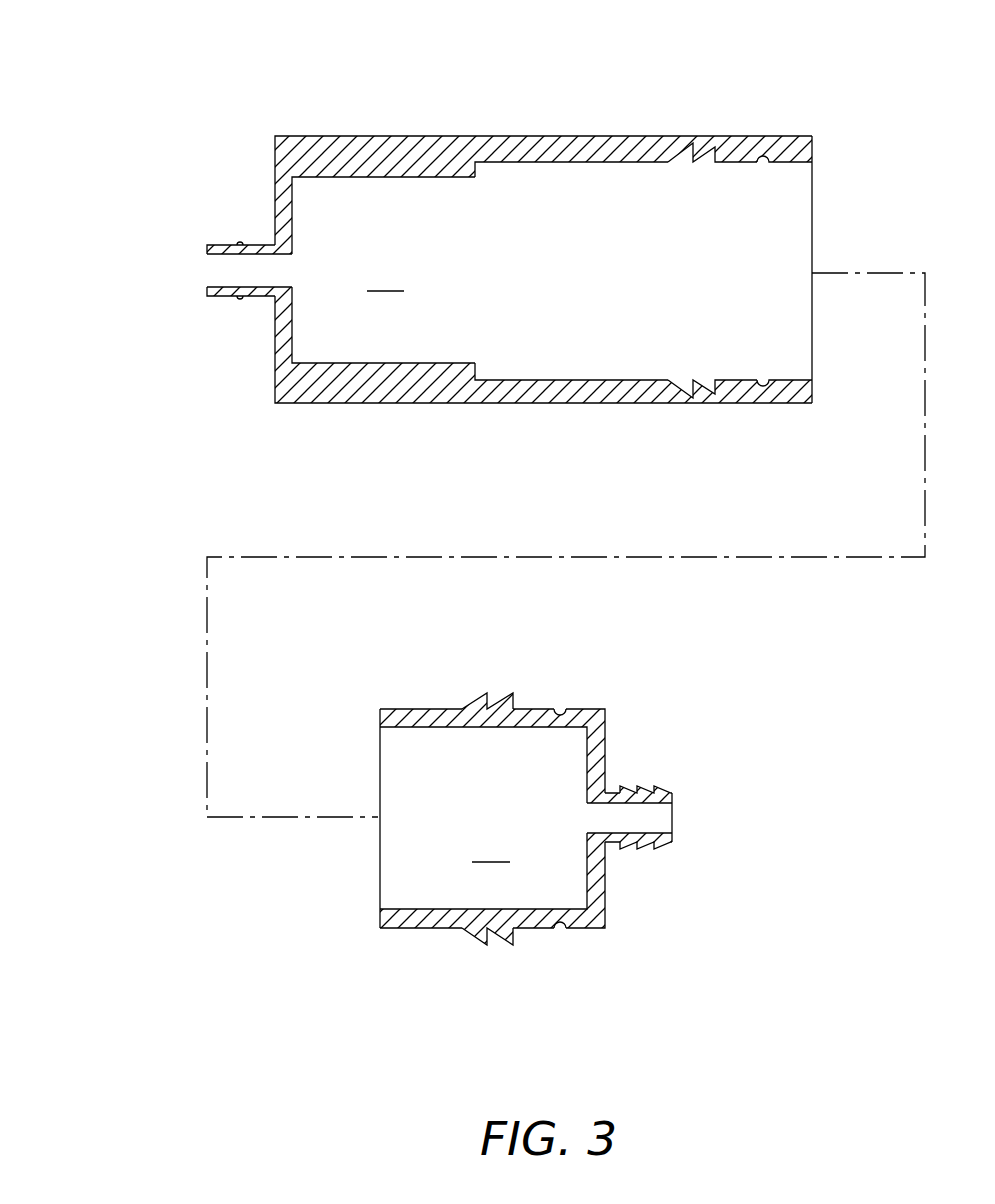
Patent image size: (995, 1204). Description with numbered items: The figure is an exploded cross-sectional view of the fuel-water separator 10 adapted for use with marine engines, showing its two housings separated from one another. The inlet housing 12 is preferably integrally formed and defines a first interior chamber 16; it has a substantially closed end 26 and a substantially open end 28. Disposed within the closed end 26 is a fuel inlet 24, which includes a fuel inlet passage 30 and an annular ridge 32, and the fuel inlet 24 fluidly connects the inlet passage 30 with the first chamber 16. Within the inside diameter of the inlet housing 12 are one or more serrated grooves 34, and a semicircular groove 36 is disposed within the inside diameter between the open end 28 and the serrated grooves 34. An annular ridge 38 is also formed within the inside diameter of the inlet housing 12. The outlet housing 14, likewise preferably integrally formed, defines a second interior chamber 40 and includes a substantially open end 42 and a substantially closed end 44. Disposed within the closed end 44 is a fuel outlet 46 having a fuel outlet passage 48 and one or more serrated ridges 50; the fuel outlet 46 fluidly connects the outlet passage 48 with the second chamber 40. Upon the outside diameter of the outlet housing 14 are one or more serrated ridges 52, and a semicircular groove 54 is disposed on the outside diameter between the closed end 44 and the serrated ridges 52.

The fuel-water separator 10 is at (210, 502).
The inlet housing 12 is at (498, 132).
The outlet housing 14 is at (393, 937).
The first interior chamber 16 is at (388, 276).
The fuel inlet 24 is at (220, 296).
The closed end 26 is at (276, 161).
The open end 28 is at (812, 330).
The fuel inlet passage 30 is at (222, 267).
The annular ridge 32 is at (242, 242).
The serrated grooves 34 is at (702, 157).
The semicircular groove 36 is at (755, 157).
The annular ridge 38 is at (476, 169).
The second interior chamber 40 is at (493, 846).
The open end 42 is at (375, 770).
The closed end 44 is at (607, 887).
The fuel outlet 46 is at (672, 842).
The fuel outlet passage 48 is at (647, 818).
The serrated ridges 50 is at (640, 786).
The serrated ridges 52 is at (497, 693).
The semicircular groove 54 is at (556, 708).